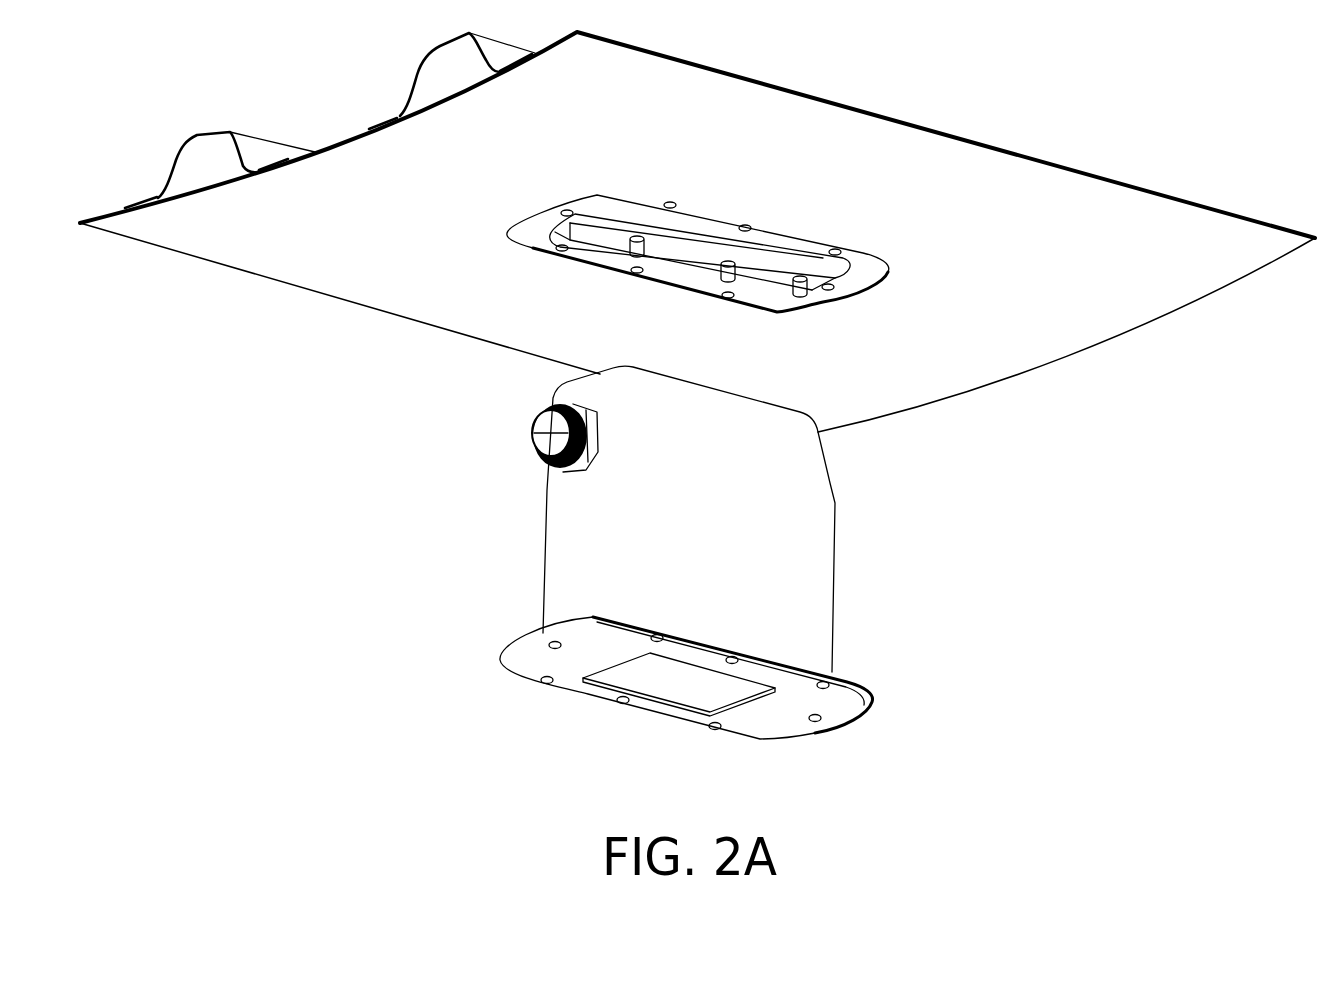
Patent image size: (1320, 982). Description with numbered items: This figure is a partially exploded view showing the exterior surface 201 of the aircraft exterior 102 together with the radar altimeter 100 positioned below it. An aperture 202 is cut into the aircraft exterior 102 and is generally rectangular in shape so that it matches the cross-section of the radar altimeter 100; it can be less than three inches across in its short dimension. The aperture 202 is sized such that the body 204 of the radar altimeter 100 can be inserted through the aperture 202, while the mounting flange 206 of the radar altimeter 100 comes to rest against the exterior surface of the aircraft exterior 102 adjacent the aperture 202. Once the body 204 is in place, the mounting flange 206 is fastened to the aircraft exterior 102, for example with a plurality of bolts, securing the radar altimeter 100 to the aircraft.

The radar altimeter 100 is at (675, 566).
The aircraft exterior 102 is at (697, 283).
The exterior surface 201 is at (1015, 352).
The aperture 202 is at (792, 281).
The body 204 is at (808, 540).
The mounting flange 206 is at (838, 702).